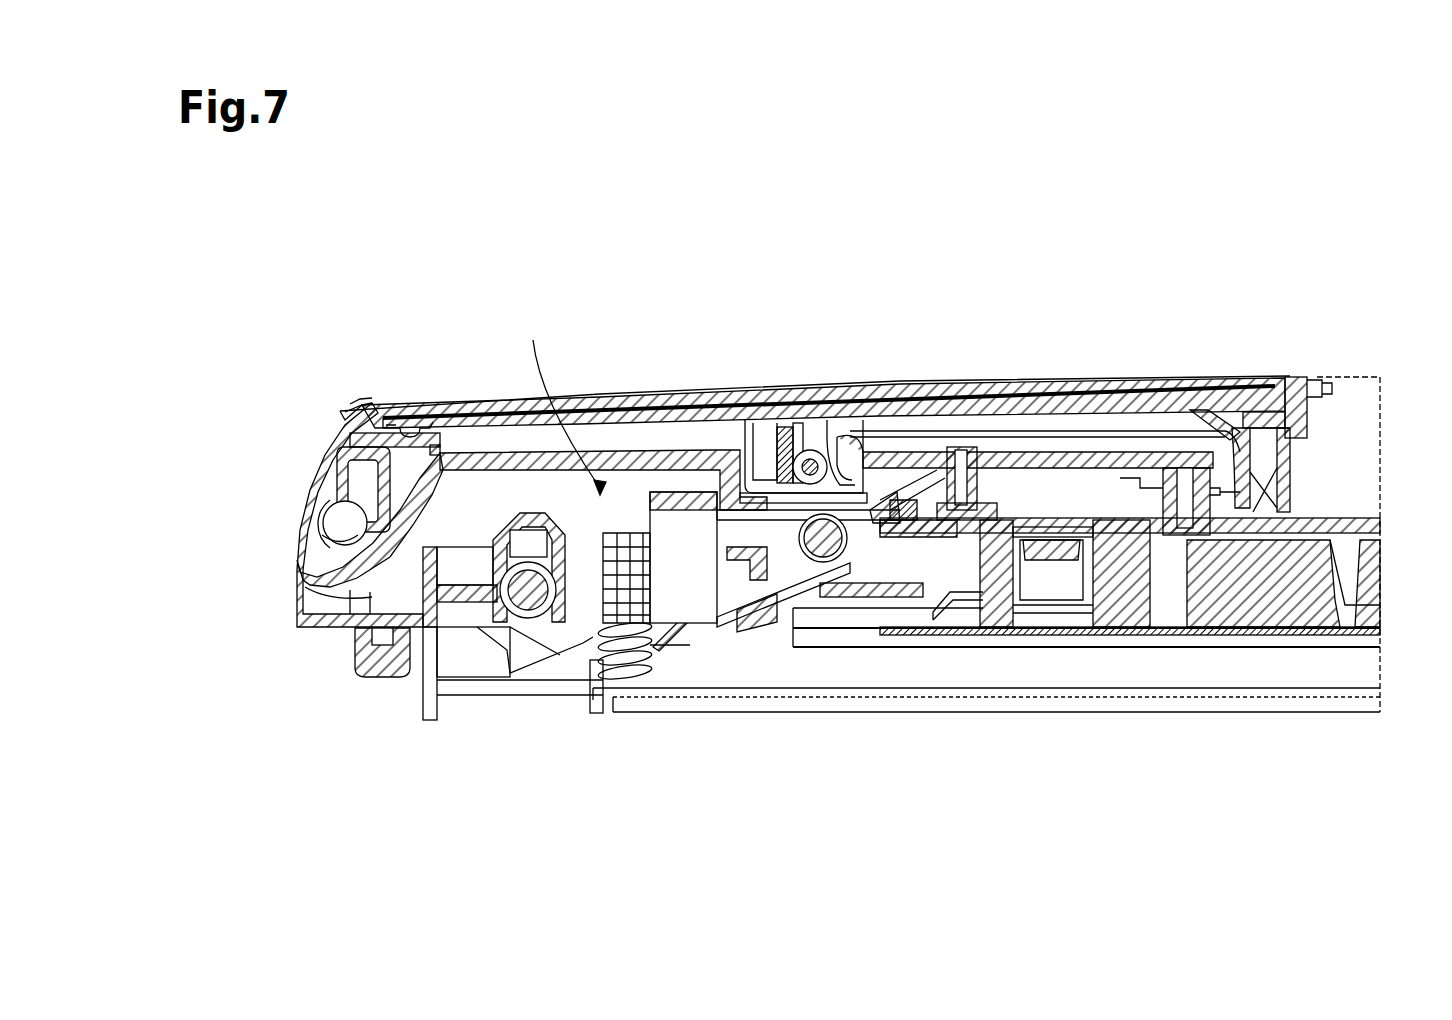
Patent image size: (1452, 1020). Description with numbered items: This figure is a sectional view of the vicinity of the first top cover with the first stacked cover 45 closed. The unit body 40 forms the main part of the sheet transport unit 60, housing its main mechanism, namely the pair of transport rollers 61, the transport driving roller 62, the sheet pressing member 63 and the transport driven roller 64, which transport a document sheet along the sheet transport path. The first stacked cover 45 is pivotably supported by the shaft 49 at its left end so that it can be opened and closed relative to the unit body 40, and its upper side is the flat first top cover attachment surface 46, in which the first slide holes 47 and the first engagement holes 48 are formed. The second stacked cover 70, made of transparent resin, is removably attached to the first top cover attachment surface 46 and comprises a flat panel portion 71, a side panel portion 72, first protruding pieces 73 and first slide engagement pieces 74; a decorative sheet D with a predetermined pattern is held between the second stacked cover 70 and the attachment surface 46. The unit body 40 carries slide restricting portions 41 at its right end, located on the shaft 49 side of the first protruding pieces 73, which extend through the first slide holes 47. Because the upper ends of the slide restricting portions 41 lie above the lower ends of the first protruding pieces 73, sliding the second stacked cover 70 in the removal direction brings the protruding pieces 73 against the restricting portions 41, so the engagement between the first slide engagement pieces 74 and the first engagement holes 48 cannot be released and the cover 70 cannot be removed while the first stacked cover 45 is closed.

The unit body 40 is at (1133, 470).
The slide restricting portions 41 is at (1292, 473).
The first stacked cover 45 is at (345, 455).
The first top cover attachment surface 46 is at (1028, 398).
The first slide holes 47 is at (1215, 398).
The first engagement holes 48 is at (455, 405).
The shaft 49 is at (335, 524).
The sheet transport unit 60 is at (562, 404).
The pair of transport rollers 61 is at (540, 655).
The transport driving roller 62 is at (798, 603).
The sheet pressing member 63 is at (660, 643).
The transport driven roller 64 is at (767, 427).
The second stacked cover 70 is at (643, 393).
The flat panel portion 71 is at (840, 397).
The side panel portion 72 is at (352, 398).
The first protruding pieces 73 is at (1298, 378).
The first slide engagement pieces 74 is at (390, 398).
The decorative sheet D is at (945, 396).